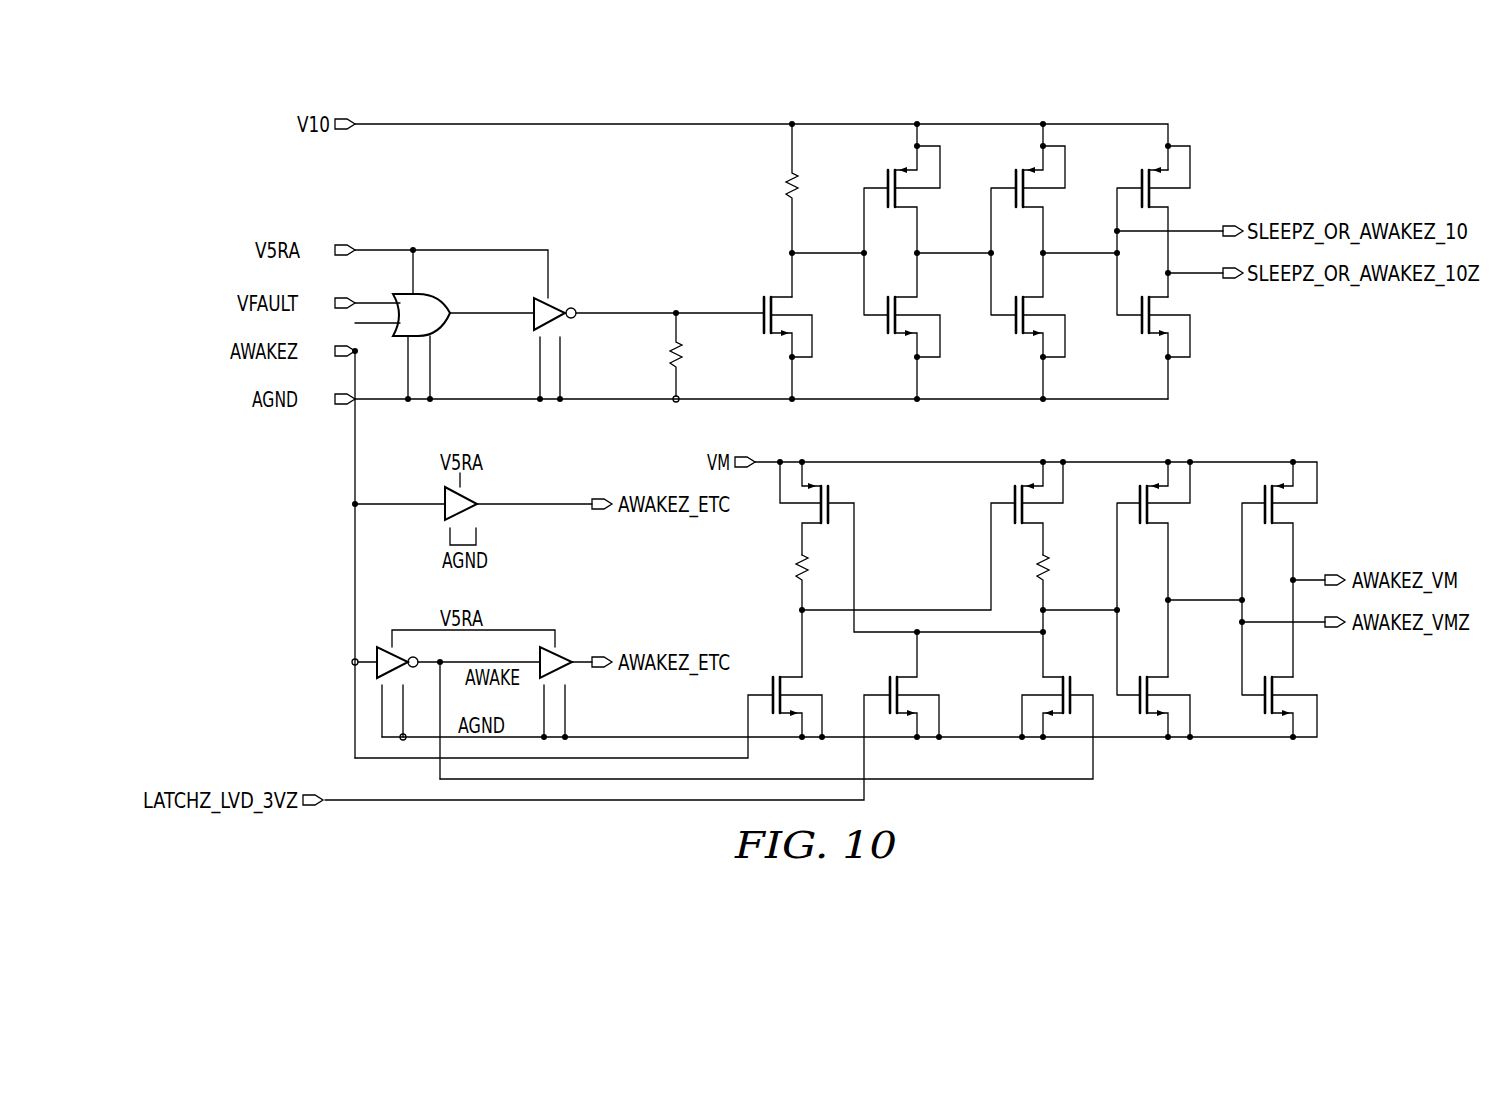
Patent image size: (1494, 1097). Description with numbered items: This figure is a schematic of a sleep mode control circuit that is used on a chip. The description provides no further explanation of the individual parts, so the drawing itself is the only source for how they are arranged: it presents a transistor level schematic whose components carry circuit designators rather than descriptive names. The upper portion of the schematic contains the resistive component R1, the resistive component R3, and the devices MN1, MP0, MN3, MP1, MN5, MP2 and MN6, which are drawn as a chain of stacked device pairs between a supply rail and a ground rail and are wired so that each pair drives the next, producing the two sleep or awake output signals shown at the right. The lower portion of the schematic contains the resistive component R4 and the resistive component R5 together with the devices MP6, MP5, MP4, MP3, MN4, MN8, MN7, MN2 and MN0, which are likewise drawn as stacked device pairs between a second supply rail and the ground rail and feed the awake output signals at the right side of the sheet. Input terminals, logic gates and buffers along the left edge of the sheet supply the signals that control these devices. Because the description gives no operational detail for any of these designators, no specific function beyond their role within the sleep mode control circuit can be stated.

The resistor R1 is at (780, 210).
The resistor R3 is at (687, 357).
The resistor R4 is at (789, 616).
The resistor R5 is at (1056, 616).
The NMOS transistor MN1 is at (797, 345).
The NMOS transistor MN3 is at (924, 326).
The NMOS transistor MN5 is at (1049, 326).
The NMOS transistor MN6 is at (1176, 345).
The PMOS transistor MP0 is at (924, 188).
The PMOS transistor MP1 is at (1049, 188).
The PMOS transistor MP2 is at (1176, 220).
The PMOS transistor MP6 is at (795, 508).
The PMOS transistor MP5 is at (1050, 508).
The PMOS transistor MP4 is at (1175, 569).
The PMOS transistor MP3 is at (1300, 569).
The NMOS transistor MN4 is at (808, 706).
The NMOS transistor MN8 is at (924, 686).
The NMOS transistor MN7 is at (1036, 706).
The NMOS transistor MN2 is at (1175, 706).
The NMOS transistor MN0 is at (1300, 706).